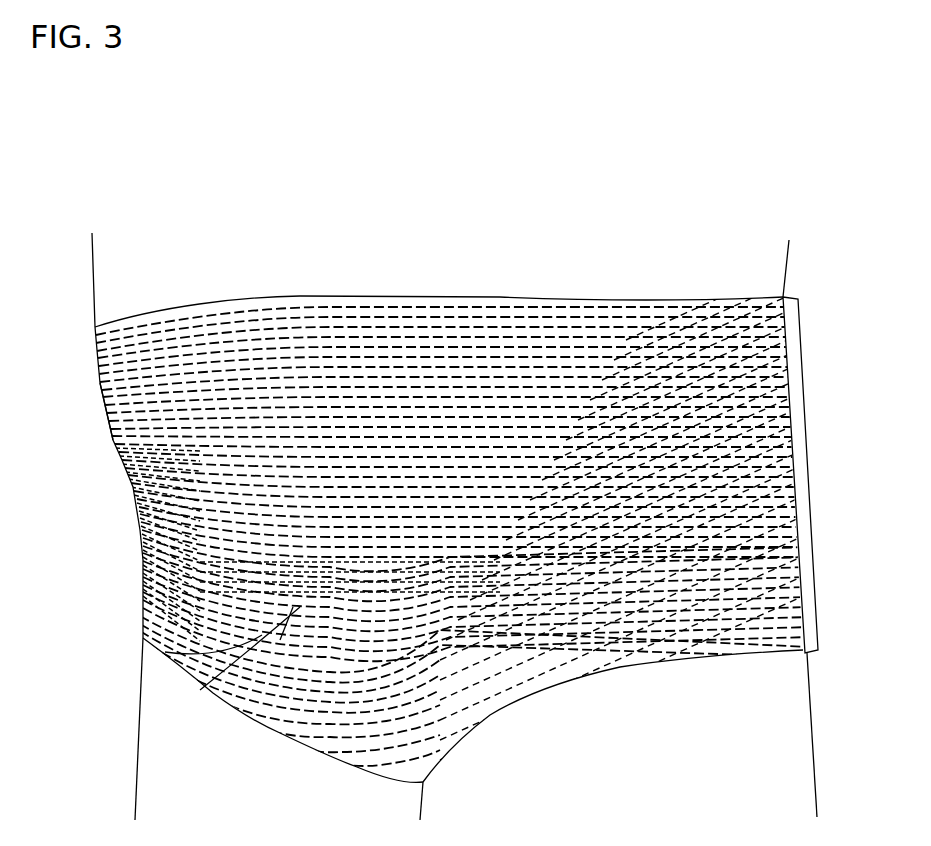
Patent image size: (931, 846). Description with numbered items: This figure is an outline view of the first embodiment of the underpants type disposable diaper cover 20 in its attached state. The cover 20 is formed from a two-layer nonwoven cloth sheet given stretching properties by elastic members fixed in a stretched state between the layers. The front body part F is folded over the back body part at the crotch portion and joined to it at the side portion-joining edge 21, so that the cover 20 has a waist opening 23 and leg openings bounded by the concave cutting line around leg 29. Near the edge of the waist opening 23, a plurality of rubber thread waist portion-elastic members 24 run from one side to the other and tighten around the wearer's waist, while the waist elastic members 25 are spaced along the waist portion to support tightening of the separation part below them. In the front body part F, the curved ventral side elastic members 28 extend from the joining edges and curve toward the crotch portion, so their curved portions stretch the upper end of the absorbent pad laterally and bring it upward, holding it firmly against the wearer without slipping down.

The underpants type disposable diaper cover 20 is at (98, 383).
The side portion-joining edge 21 is at (800, 402).
The waist opening 23 is at (382, 296).
The waist portion-elastic members 24 is at (272, 330).
The waist elastic members 25 is at (500, 473).
The ventral side elastic members 28 is at (238, 690).
The cutting line around leg 29 is at (773, 648).
The front body part F is at (115, 440).